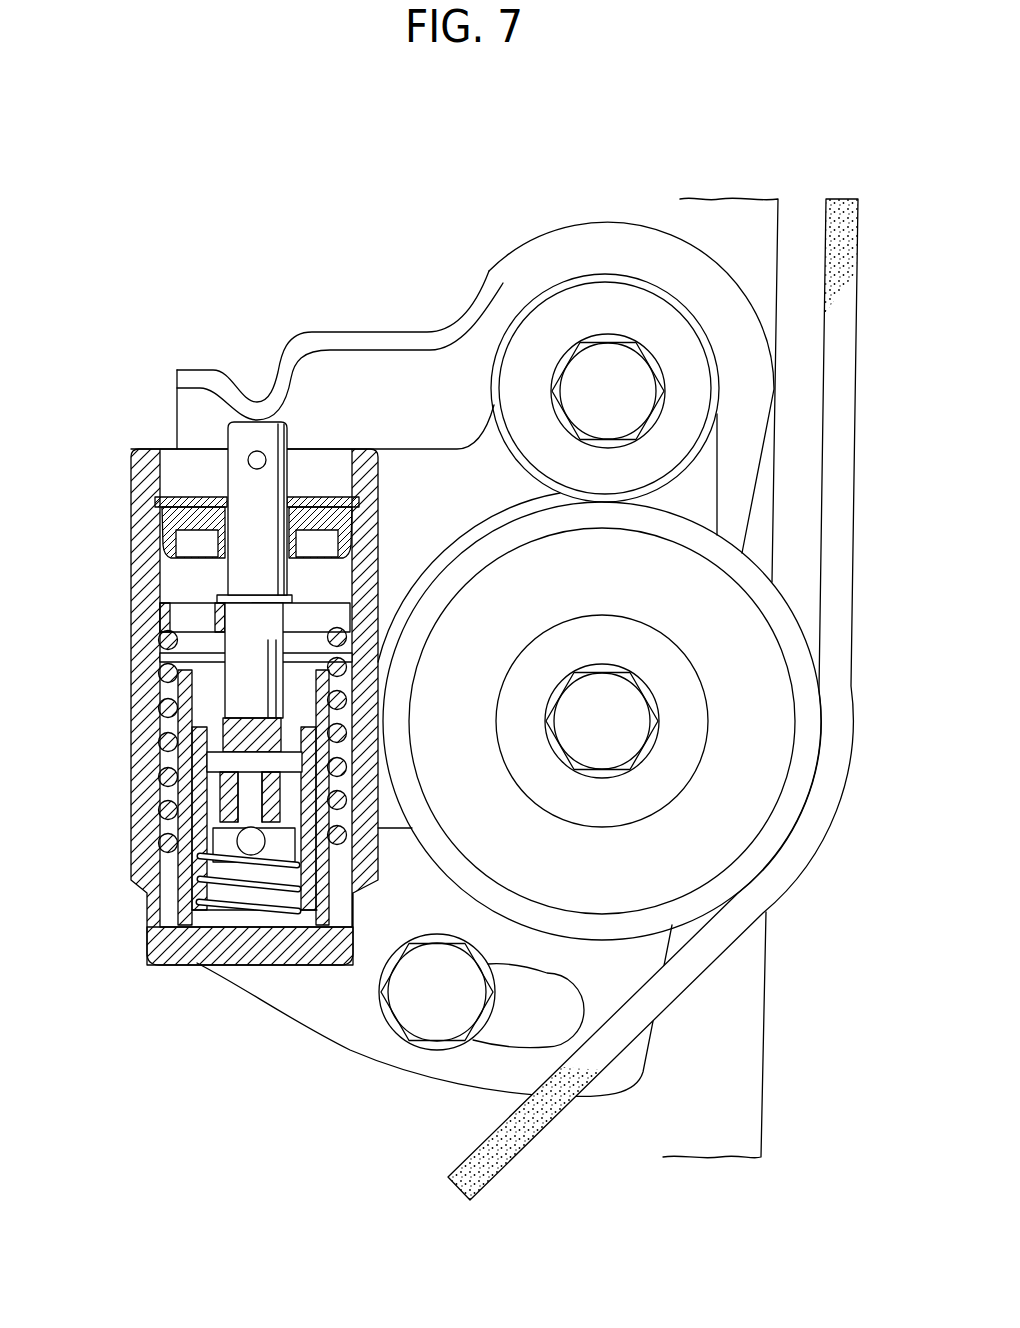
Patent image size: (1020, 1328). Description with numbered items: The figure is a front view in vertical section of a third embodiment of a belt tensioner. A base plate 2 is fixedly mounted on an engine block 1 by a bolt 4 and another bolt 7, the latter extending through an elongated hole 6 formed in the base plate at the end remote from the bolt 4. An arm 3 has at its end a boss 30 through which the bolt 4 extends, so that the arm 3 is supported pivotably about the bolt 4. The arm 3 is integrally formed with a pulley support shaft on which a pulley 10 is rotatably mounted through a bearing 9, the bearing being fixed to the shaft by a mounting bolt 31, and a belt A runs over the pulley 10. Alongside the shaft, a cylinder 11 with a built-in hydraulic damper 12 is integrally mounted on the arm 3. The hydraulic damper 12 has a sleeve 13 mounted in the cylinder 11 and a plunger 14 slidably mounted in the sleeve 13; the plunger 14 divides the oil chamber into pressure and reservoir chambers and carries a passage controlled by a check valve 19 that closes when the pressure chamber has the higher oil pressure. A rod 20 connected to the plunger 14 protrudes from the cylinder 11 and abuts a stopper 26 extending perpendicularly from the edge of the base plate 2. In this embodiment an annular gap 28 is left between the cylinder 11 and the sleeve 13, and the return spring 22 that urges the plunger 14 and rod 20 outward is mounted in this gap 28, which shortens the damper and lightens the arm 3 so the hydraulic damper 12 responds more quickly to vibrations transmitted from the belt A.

The engine block 1 is at (725, 213).
The base plate 2 is at (621, 243).
The arm 3 is at (421, 470).
The bolt 4 is at (598, 362).
The elongated hole 6 is at (510, 1037).
The bolt 7 is at (405, 1002).
The bearing 9 is at (706, 853).
The pulley 10 is at (806, 668).
The cylinder 11 is at (148, 590).
The hydraulic damper 12 is at (150, 669).
The sleeve 13 is at (177, 838).
The plunger 14 is at (162, 880).
The check valve 19 is at (247, 856).
The rod 20 is at (245, 480).
The return spring 22 is at (163, 713).
The stopper 26 is at (335, 340).
The annular gap 28 is at (165, 758).
The boss 30 is at (538, 305).
The mounting bolt 31 is at (578, 705).
The belt A is at (843, 265).